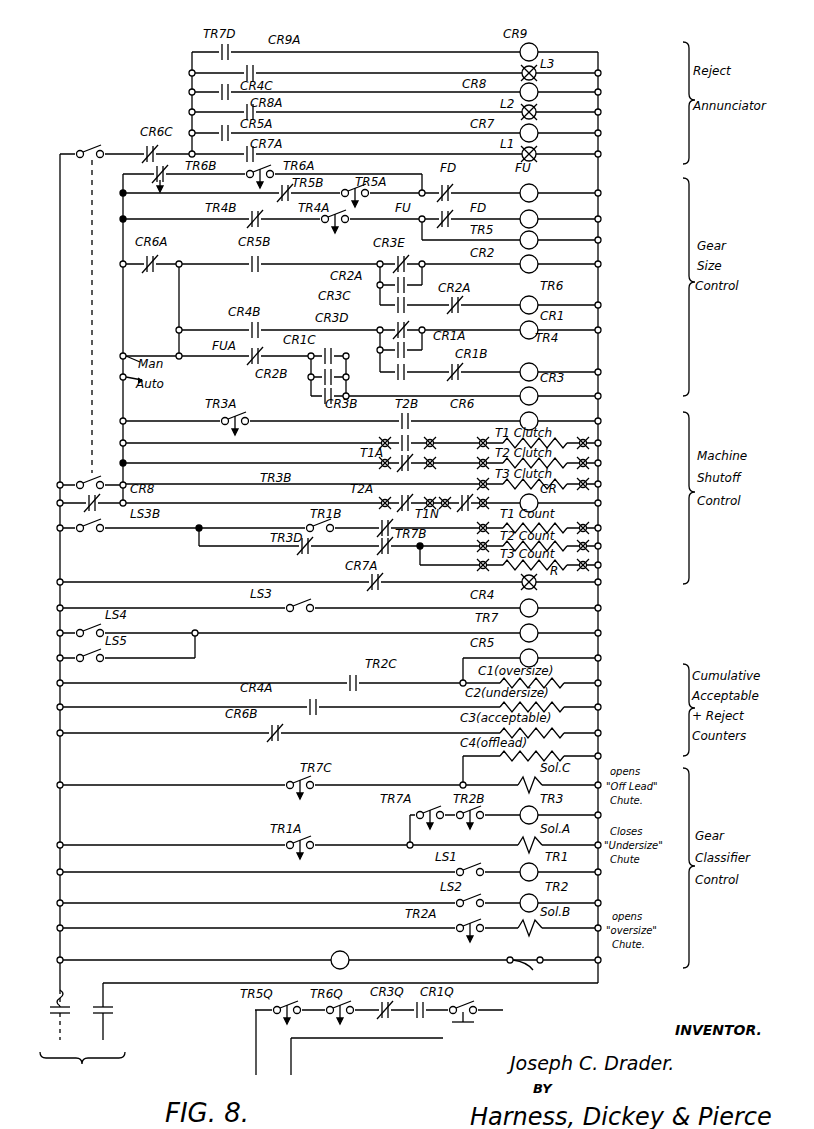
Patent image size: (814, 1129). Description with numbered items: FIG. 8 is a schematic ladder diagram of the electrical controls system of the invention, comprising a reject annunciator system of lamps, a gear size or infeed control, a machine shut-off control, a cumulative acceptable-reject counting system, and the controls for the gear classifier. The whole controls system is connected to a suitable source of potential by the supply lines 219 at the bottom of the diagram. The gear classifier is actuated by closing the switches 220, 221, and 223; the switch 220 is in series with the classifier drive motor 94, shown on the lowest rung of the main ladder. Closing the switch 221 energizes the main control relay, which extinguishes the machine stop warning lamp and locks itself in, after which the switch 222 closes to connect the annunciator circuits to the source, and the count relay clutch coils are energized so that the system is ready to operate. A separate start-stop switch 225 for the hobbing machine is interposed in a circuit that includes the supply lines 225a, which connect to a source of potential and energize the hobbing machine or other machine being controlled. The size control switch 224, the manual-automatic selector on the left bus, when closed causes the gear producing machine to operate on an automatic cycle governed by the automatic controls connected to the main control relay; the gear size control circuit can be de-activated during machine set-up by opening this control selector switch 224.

The switch 222 is at (99, 133).
The switch 221 is at (78, 484).
The size control switch 224 is at (130, 355).
The switch 223 is at (108, 1013).
The supply lines 219 is at (82, 1050).
The supply lines 225a is at (254, 1056).
The start-stop switch 225 is at (470, 1008).
The switch 220 is at (538, 965).
The classifier drive motor 94 is at (346, 955).